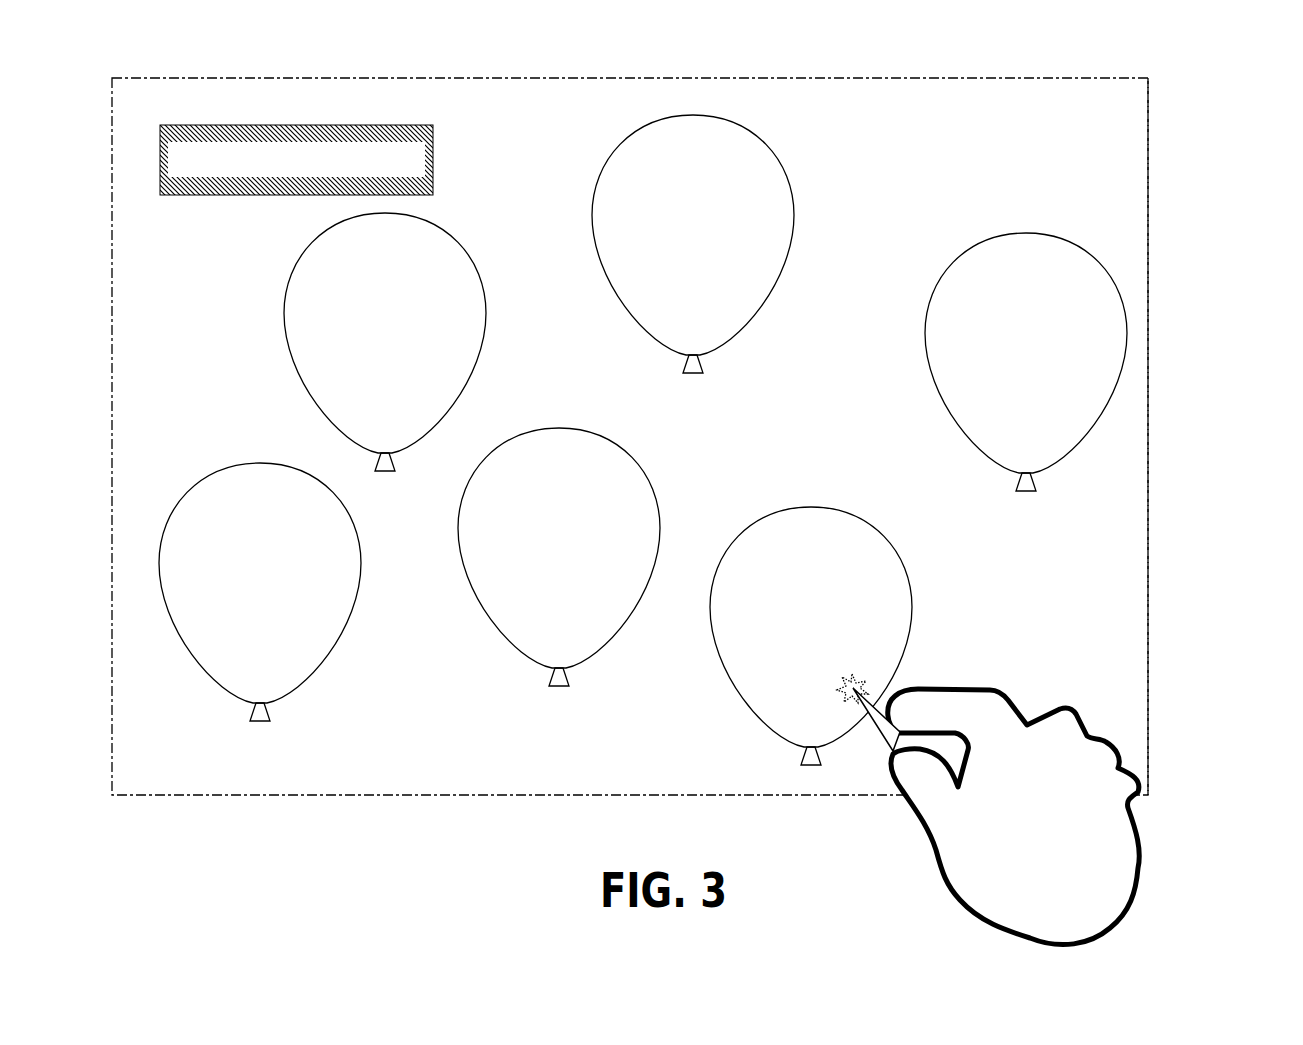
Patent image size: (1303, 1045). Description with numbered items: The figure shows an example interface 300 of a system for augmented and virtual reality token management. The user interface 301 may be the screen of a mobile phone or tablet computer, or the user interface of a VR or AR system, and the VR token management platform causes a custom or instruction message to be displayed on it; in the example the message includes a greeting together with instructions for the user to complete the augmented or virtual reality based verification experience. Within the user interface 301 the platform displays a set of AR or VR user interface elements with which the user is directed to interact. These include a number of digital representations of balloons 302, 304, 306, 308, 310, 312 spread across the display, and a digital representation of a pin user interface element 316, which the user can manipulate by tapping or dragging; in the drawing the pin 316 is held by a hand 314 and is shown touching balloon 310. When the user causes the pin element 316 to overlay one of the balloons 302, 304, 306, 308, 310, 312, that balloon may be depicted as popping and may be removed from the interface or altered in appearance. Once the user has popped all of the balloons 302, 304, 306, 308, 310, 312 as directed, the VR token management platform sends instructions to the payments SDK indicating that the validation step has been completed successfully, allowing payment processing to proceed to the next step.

The user interface display 300 is at (1163, 86).
The user interface 301 is at (1148, 455).
The balloon user interface element 302 is at (233, 594).
The balloon user interface element 304 is at (363, 317).
The balloon user interface element 306 is at (533, 534).
The balloon user interface element 308 is at (667, 219).
The balloon user interface element 310 is at (794, 626).
The balloon user interface element 312 is at (1007, 352).
The message banner / user hand 314 is at (283, 123).
The pin user interface element 316 is at (894, 728).